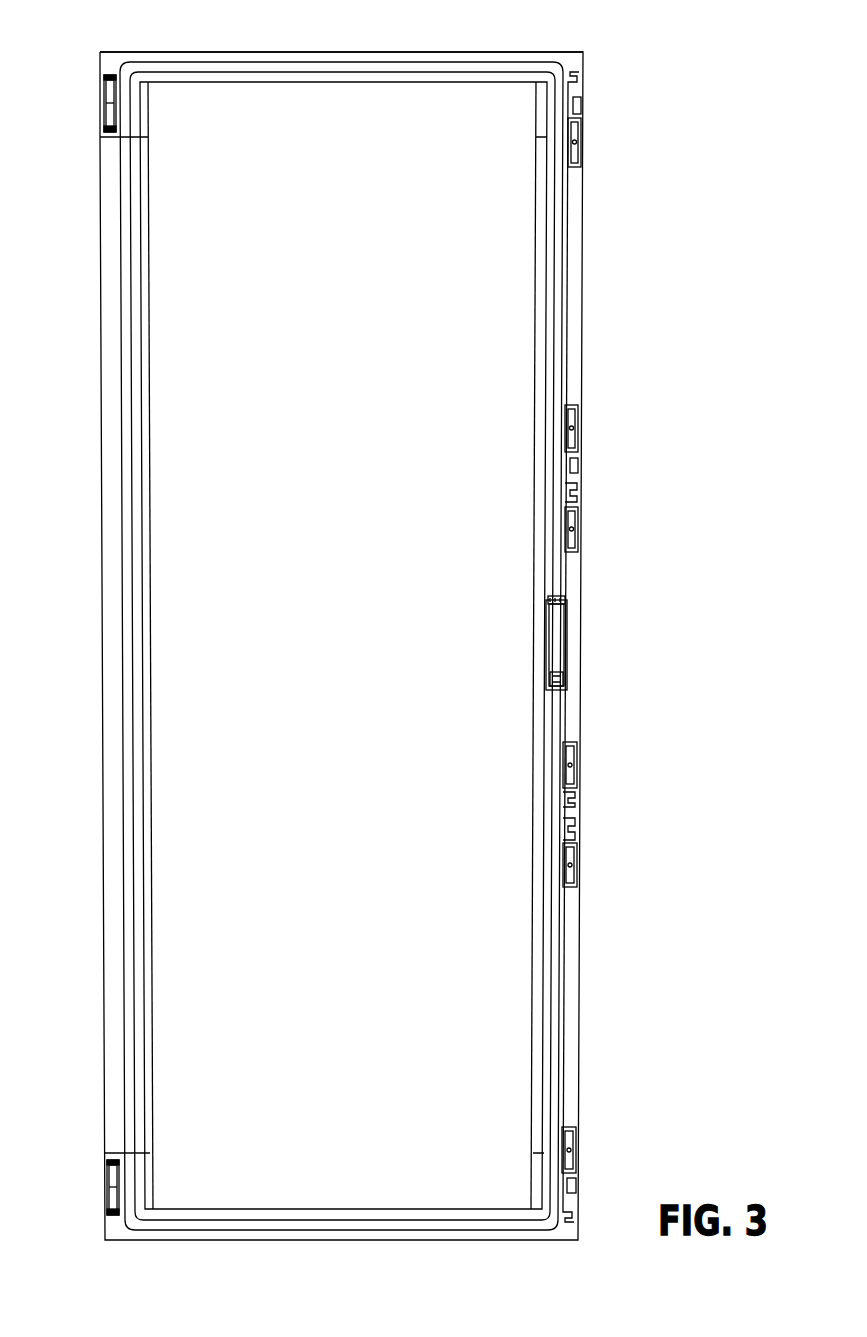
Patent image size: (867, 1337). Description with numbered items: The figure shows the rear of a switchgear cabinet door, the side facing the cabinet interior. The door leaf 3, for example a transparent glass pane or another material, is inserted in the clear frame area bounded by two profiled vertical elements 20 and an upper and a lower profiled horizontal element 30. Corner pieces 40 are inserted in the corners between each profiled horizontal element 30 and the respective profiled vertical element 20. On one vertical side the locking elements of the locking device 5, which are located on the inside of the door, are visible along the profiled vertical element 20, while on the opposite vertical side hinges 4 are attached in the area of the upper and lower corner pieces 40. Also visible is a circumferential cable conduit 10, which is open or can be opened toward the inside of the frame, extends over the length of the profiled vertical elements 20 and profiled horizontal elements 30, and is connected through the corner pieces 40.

The door leaf 3 is at (165, 1002).
The hinges 4 is at (103, 110).
The locking device 5 is at (556, 640).
The circumferential cable conduit 10 is at (136, 598).
The profiled vertical element 20 is at (113, 722).
The profiled horizontal element 30 is at (477, 53).
The corner piece 40 is at (100, 57).